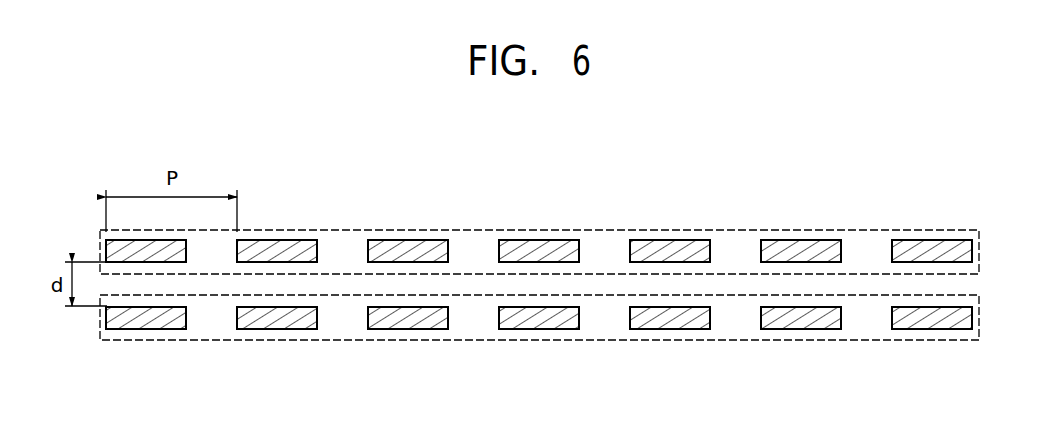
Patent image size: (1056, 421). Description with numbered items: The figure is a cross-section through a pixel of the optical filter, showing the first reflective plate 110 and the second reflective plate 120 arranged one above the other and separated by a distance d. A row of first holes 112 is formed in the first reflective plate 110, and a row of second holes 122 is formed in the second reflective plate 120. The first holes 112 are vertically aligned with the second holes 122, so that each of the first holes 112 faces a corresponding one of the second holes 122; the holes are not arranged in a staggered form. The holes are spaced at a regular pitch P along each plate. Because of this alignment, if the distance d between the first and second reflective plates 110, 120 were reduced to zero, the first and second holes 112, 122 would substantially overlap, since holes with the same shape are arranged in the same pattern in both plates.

The first reflective plate 110 is at (908, 228).
The first holes 112 is at (711, 250).
The second reflective plate 120 is at (906, 343).
The second holes 122 is at (711, 317).